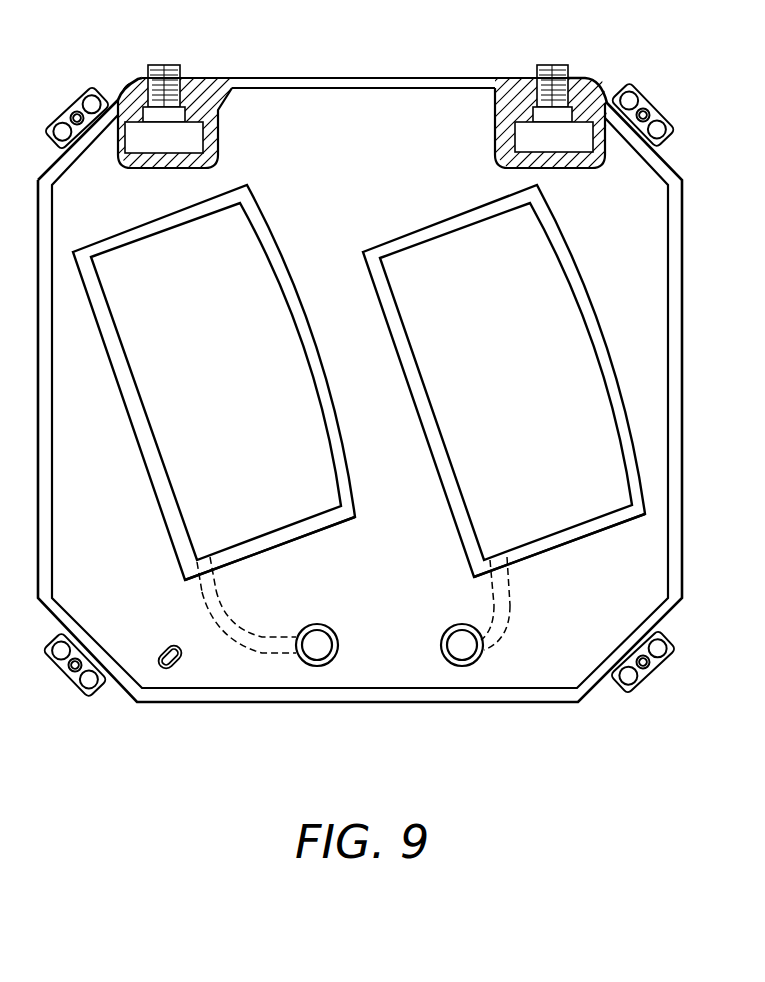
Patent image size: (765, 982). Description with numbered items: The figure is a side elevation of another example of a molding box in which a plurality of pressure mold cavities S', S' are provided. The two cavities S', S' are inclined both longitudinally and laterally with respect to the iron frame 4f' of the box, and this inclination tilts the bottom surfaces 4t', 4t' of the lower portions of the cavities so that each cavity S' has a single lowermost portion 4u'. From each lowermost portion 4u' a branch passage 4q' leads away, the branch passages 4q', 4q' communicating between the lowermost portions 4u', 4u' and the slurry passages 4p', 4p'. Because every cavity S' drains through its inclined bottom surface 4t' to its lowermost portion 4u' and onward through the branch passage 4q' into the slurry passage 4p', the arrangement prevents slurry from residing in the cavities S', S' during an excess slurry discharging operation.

The iron frame 4f' is at (363, 44).
The pressure mold cavity S' is at (359, 382).
The bottom surface 4t' is at (415, 554).
The lowermost portion 4u' is at (320, 589).
The branch passage 4q' is at (388, 674).
The slurry passage 4p' is at (391, 691).